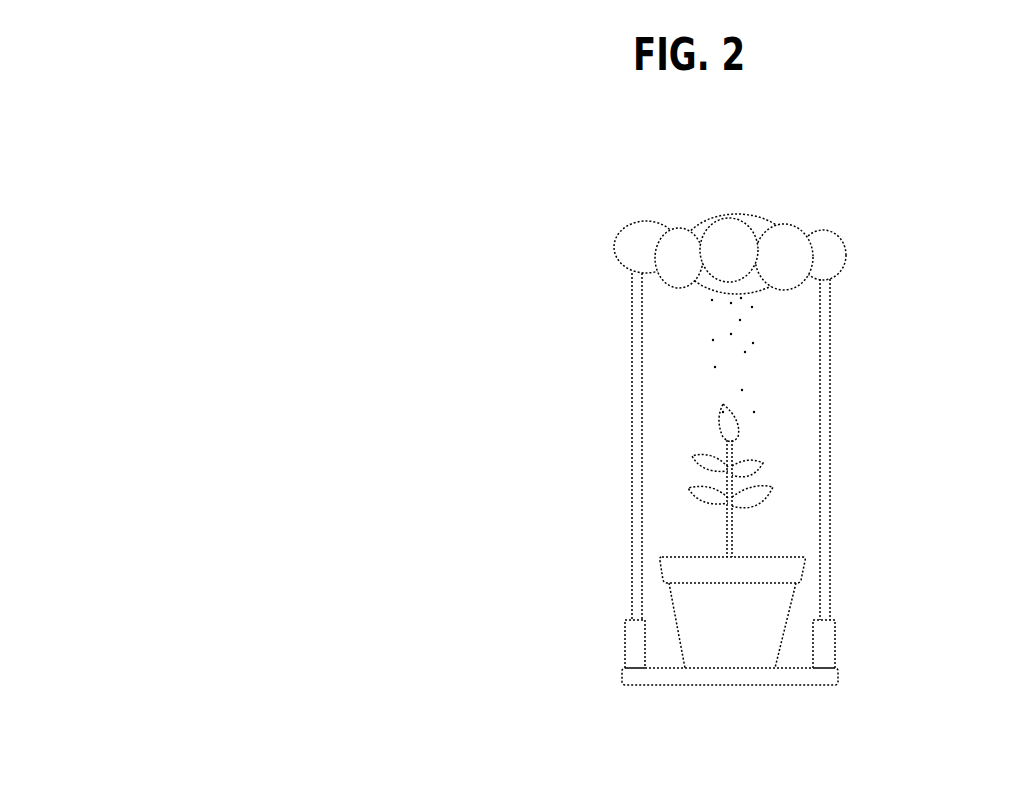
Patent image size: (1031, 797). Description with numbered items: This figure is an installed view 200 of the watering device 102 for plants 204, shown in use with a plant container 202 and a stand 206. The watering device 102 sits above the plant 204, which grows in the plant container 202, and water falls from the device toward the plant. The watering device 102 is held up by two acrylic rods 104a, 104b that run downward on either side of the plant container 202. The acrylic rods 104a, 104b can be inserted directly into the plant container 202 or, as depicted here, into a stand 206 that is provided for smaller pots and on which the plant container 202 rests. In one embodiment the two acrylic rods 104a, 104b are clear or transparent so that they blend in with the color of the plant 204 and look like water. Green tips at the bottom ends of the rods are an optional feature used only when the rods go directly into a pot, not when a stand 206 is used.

The installed view 200 is at (372, 385).
The watering device 102 is at (628, 245).
The acrylic rod 104a is at (629, 435).
The acrylic rod 104b is at (835, 507).
The plant container 202 is at (758, 617).
The plants 204 is at (743, 462).
The stand 206 is at (627, 635).